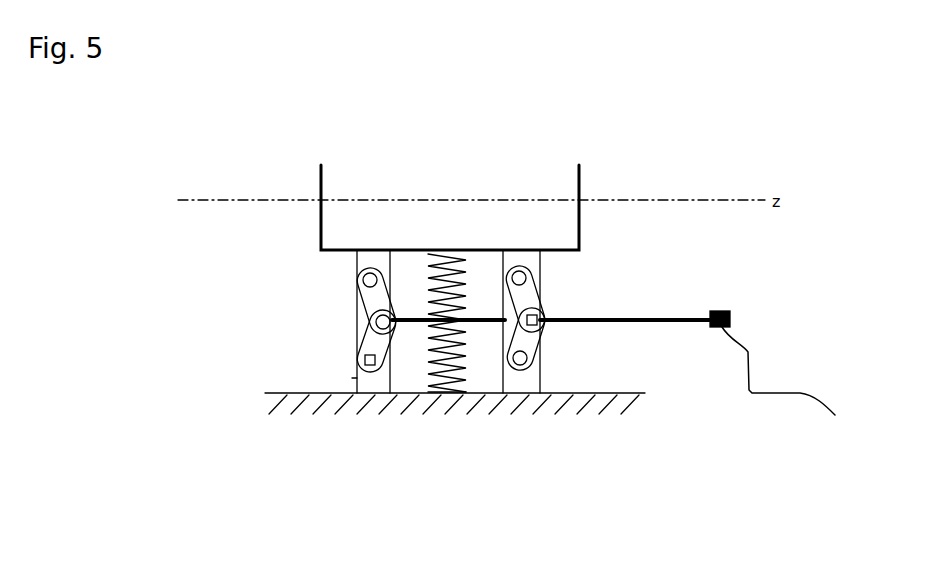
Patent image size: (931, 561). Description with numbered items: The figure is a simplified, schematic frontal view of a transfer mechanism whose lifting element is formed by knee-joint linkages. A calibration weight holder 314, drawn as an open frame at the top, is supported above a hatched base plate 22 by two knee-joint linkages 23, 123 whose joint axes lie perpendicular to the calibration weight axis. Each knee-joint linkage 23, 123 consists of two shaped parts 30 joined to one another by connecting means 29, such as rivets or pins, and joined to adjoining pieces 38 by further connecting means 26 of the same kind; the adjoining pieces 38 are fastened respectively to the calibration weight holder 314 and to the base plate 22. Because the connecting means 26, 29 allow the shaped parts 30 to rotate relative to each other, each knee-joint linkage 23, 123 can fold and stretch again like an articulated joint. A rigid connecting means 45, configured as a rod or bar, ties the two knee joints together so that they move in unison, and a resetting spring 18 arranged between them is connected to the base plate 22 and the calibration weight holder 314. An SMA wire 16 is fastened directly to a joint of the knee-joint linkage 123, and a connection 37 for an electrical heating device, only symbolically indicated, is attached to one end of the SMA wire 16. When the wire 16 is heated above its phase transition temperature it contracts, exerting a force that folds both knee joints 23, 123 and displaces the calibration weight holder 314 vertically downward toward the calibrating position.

The calibration weight holder 314 is at (560, 178).
The base plate 22 is at (620, 412).
The rigid connecting means 45 is at (482, 313).
The resetting spring 18 is at (472, 397).
The adjoining pieces 38 is at (355, 262).
The shaped parts 30 is at (360, 290).
The connecting means 29 is at (365, 318).
The knee-joint linkage 23 is at (330, 321).
The SMA wire 16 is at (612, 318).
The knee-joint linkage 123 is at (582, 280).
The connecting means 26 is at (353, 378).
The connection 37 is at (762, 392).